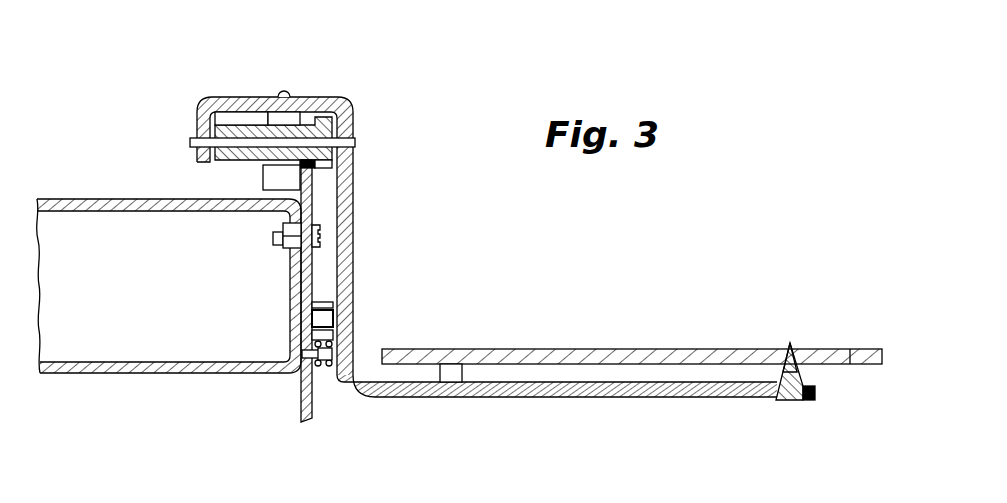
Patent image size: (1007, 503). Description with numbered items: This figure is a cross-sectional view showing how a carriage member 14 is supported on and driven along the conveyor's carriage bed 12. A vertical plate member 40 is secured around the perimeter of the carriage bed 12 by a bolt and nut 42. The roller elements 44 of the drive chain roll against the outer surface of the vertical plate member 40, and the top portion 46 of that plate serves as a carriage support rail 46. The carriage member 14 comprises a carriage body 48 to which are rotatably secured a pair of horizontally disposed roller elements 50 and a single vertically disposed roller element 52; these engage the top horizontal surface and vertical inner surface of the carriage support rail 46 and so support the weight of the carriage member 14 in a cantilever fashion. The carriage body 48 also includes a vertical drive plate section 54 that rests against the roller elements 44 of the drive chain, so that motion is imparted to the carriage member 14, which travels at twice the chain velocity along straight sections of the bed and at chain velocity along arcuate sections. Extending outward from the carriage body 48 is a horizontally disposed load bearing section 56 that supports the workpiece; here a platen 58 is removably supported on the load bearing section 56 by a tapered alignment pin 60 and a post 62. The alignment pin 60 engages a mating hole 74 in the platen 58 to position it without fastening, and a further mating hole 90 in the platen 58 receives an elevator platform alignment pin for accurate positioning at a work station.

The carriage bed 12 is at (82, 194).
The carriage member 14 is at (487, 244).
The vertical plate member 40 is at (328, 194).
The bolt and nut 42 is at (283, 250).
The roller elements 44 is at (306, 321).
The carriage support rail 46 is at (315, 163).
The carriage body 48 is at (318, 99).
The horizontally disposed roller elements 50 is at (243, 125).
The vertically disposed roller element 52 is at (263, 180).
The vertical drive plate section 54 is at (350, 288).
The horizontally disposed load bearing section 56 is at (593, 398).
The platen 58 is at (428, 348).
The alignment pin 60 is at (775, 372).
The post 62 is at (463, 372).
The mating hole 74 is at (802, 347).
The mating holes 90 is at (857, 367).